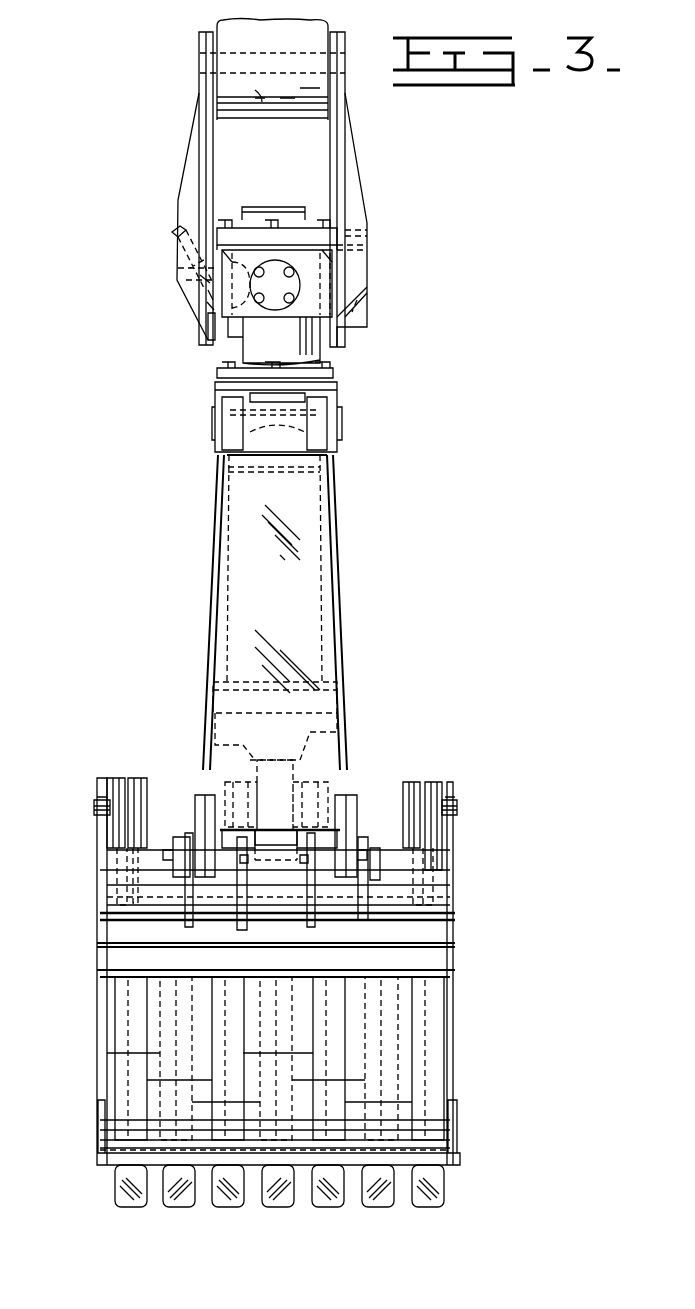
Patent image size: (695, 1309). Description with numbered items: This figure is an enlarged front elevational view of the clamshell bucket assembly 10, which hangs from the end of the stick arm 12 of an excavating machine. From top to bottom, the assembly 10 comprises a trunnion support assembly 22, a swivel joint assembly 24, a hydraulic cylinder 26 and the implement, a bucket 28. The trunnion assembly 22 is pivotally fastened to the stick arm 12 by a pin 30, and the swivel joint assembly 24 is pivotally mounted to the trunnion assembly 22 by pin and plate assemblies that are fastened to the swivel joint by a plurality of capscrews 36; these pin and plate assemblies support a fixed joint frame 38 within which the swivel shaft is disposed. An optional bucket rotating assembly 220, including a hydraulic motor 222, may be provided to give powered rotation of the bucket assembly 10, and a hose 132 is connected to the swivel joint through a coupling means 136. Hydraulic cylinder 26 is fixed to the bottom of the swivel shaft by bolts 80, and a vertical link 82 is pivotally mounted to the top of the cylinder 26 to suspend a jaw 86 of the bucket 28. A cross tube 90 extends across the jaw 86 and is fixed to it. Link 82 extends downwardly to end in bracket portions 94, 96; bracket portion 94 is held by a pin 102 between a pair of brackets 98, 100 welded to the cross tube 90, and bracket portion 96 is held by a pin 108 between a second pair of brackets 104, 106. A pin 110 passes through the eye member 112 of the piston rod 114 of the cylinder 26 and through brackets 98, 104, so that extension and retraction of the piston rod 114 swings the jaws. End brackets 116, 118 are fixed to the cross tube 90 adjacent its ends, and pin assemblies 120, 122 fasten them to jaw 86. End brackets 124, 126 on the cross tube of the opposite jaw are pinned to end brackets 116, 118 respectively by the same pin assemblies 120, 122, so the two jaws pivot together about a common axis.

The clamshell bucket assembly 10 is at (444, 370).
The stick arm 12 is at (257, 44).
The trunnion support assembly 22 is at (372, 140).
The swivel joint assembly 24 is at (350, 340).
The hydraulic cylinder 26 is at (318, 588).
The bucket 28 is at (470, 930).
The pin 30 is at (216, 105).
The capscrews 36 is at (282, 283).
The joint frame 38 is at (248, 355).
The bolts 80 is at (328, 368).
The vertical link 82 is at (320, 527).
The jaw 86 is at (452, 958).
The cross tube 90 is at (255, 875).
The bracket portion 94 is at (315, 925).
The bracket portion 96 is at (193, 925).
The bracket 98 is at (247, 925).
The bracket 100 is at (368, 918).
The pin 102 is at (375, 880).
The bracket 104 is at (278, 857).
The bracket 106 is at (150, 915).
The pin 108 is at (176, 845).
The pin 110 is at (350, 835).
The eye member 112 is at (342, 766).
The piston rod 114 is at (345, 742).
The end bracket 116 is at (432, 785).
The end bracket 118 is at (122, 778).
The pin assembly 120 is at (456, 815).
The pin assembly 122 is at (95, 812).
The end bracket 124 is at (410, 790).
The end bracket 126 is at (135, 778).
The hose 132 is at (170, 232).
The coupling means 136 is at (200, 305).
The bucket rotating assembly 220 is at (310, 216).
The hydraulic motor 222 is at (365, 315).